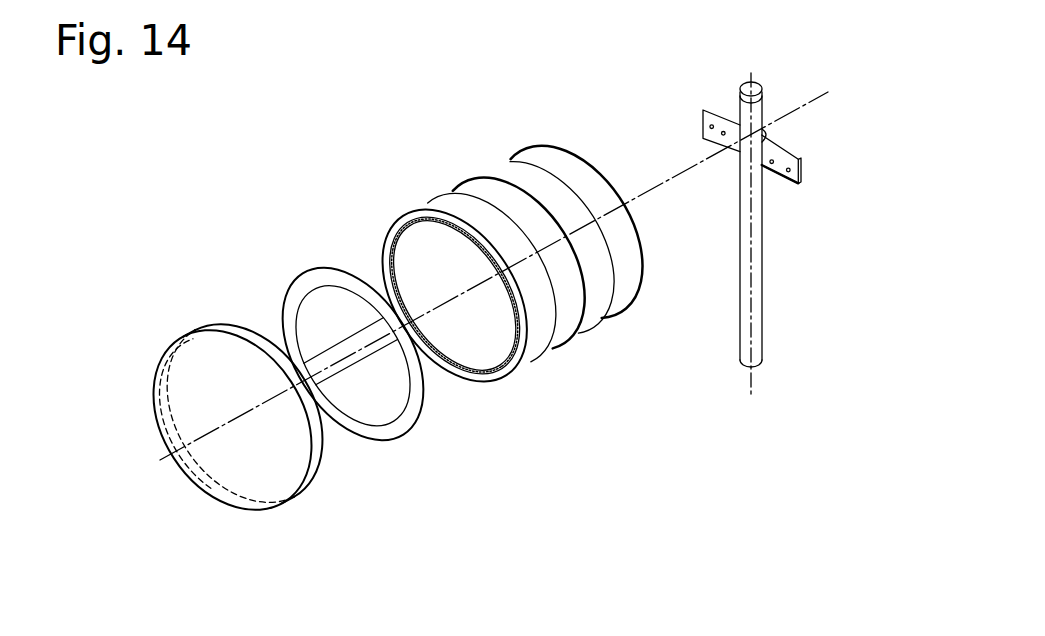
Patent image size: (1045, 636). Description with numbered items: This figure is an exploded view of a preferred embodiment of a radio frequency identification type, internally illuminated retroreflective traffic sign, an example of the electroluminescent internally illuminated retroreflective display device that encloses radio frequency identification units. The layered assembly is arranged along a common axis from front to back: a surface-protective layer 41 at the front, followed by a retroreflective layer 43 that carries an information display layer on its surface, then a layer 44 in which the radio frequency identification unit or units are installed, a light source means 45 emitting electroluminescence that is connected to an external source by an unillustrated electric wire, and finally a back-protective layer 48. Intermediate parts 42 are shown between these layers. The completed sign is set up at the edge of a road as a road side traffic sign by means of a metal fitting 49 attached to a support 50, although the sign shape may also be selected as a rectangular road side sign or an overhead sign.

The surface-protective layer 41 is at (267, 498).
The sealing ring 42 is at (307, 473).
The retroreflective layer 43 is at (397, 427).
The radio frequency identification layer 44 is at (412, 242).
The light source means 45 is at (475, 188).
The back-protective layer 48 is at (535, 156).
The metal fitting 49 is at (793, 183).
The support 50 is at (755, 279).